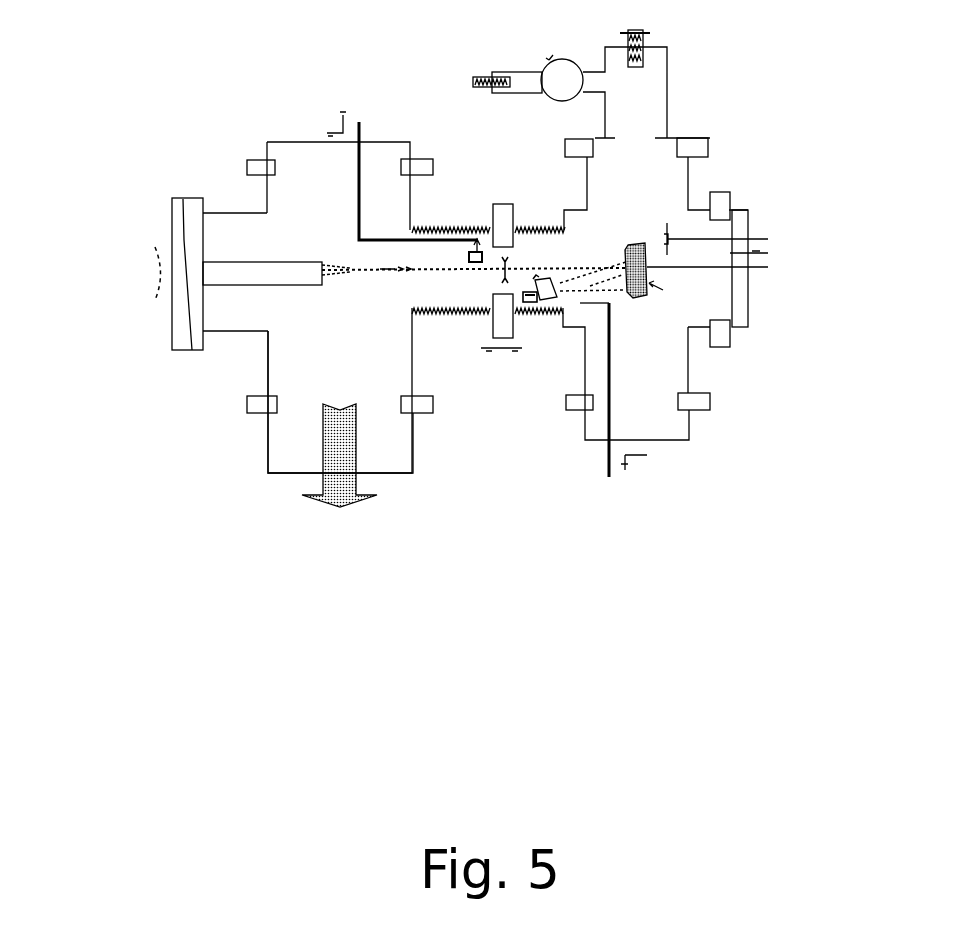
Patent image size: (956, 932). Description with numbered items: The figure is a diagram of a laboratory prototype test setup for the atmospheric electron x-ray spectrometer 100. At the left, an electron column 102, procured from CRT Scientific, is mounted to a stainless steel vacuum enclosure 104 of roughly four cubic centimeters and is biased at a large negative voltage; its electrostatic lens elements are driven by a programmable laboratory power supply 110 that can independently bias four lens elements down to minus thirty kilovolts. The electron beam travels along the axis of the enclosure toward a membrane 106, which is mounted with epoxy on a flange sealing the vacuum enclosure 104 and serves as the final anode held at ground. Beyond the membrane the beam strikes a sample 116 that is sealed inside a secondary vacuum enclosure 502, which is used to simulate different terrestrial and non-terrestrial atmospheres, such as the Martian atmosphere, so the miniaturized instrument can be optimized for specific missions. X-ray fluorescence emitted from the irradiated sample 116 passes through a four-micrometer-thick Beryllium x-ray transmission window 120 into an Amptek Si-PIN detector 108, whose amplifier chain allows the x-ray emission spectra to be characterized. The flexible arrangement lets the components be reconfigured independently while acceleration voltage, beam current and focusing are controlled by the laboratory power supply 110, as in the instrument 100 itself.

The atmospheric electron x-ray spectrometer 100 is at (467, 532).
The electron column 102 is at (268, 253).
The vacuum enclosure 104 is at (267, 453).
The membrane 106 is at (510, 267).
The Si-PIN detector 108 is at (547, 303).
The laboratory power supply 110 is at (180, 310).
The sample 116 is at (643, 298).
The Beryllium x-ray transmission window 120 is at (560, 290).
The secondary vacuum enclosure 502 is at (688, 417).